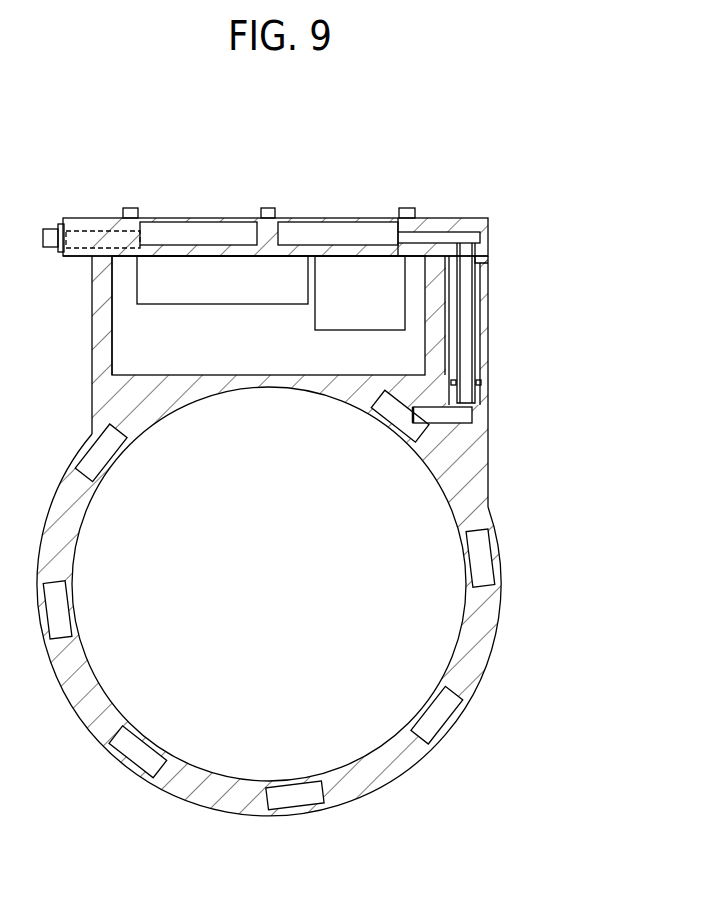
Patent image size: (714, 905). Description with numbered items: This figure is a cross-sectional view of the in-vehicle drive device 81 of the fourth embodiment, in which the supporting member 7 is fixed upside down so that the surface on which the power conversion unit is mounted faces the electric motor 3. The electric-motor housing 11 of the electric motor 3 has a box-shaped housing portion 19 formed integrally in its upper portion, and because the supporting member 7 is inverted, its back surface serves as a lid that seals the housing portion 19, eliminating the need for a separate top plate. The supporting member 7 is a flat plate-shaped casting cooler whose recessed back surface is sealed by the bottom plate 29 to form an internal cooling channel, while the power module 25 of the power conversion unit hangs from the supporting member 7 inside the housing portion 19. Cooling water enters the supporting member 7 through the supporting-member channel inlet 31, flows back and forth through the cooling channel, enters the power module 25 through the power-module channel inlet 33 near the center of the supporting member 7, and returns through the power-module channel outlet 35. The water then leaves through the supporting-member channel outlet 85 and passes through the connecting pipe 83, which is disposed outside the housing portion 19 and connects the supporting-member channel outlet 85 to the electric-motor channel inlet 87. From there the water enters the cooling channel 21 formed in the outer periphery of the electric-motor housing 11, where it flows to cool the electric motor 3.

The electric motor 3 is at (522, 683).
The supporting member 7 is at (432, 225).
The electric-motor housing 11 is at (489, 479).
The housing portion 19 is at (93, 313).
The cooling channel 21 is at (491, 560).
The power module 25 is at (250, 296).
The bottom plate 29 is at (370, 218).
The supporting-member channel inlet 31 is at (62, 220).
The power-module channel inlet 33 is at (240, 263).
The power-module channel outlet 35 is at (293, 257).
The in-vehicle drive device 81 is at (491, 141).
The connecting pipe 83 is at (479, 314).
The supporting-member channel outlet 85 is at (489, 246).
The electric-motor channel inlet 87 is at (479, 373).